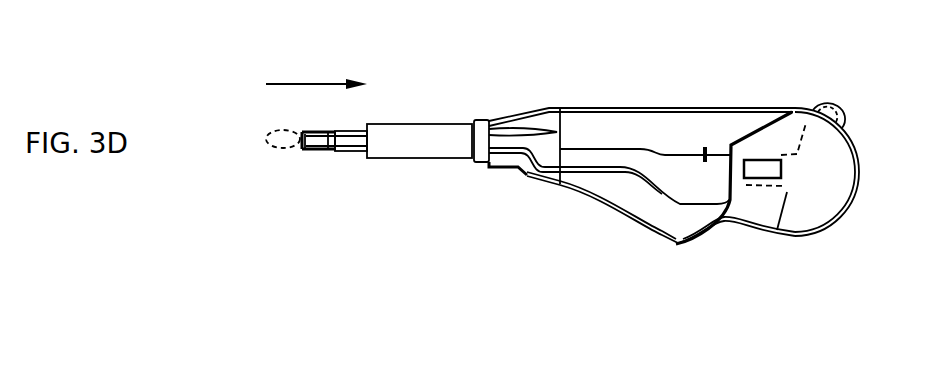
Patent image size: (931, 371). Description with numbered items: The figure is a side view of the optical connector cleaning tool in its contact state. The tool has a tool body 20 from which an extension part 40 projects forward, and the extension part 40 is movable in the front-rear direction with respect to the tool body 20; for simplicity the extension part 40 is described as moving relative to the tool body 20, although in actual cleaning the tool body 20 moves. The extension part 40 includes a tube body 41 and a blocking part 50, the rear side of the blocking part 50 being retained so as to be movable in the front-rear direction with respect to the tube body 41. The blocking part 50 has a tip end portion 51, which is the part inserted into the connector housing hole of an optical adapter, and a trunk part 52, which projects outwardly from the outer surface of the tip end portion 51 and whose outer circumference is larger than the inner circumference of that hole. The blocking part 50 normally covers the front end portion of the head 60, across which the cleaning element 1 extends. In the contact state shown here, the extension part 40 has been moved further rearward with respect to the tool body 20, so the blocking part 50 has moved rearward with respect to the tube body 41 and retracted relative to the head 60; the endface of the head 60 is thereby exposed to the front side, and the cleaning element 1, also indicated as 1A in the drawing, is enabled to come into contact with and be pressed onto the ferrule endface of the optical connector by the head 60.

The tool body 20 is at (664, 78).
The extension part 40 is at (423, 78).
The tube body 41 is at (427, 145).
The blocking part 50 is at (379, 226).
The tip end portion 51 is at (313, 151).
The trunk part 52 is at (357, 152).
The optical connector 1A is at (300, 143).
The cleaning element 1 is at (236, 161).
The head 60 is at (306, 141).